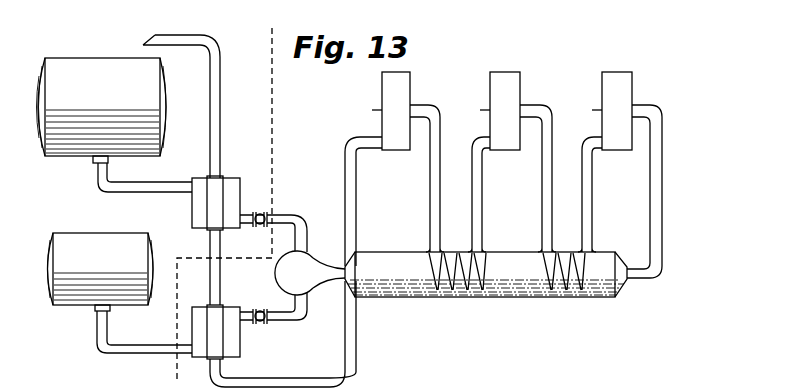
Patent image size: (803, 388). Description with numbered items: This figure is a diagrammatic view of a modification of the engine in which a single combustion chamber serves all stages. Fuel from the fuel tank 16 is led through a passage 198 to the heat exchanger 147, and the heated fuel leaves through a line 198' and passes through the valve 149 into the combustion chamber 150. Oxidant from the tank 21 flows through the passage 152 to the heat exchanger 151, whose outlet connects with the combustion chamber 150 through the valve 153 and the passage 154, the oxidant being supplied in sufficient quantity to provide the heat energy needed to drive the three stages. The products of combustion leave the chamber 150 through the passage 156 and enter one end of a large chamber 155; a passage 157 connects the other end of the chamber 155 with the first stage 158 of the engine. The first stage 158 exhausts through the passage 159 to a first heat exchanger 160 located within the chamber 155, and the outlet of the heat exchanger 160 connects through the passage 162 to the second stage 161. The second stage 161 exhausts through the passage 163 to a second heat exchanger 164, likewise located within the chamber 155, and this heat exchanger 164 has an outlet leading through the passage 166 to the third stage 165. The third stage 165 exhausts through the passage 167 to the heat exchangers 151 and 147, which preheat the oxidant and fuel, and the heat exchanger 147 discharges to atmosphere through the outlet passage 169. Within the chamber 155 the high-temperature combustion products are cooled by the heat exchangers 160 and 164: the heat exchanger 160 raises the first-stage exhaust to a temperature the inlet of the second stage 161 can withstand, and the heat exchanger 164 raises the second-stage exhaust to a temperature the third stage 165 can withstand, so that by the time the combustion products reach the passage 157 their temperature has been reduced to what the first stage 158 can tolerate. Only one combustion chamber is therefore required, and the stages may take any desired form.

The fuel tank 16 is at (85, 62).
The oxidant tank 21 is at (73, 236).
The heat exchanger 147 is at (233, 186).
The valve 149 is at (266, 213).
The combustion chamber 150 is at (323, 254).
The heat exchanger 151 is at (241, 338).
The passage 152 is at (148, 348).
The valve 153 is at (259, 313).
The passage 154 is at (298, 322).
The large chamber 155 is at (492, 298).
The passage 156 is at (343, 285).
The passage 157 is at (662, 228).
The first stage 158 is at (639, 73).
The passage 159 is at (588, 225).
The first heat exchanger 160 is at (587, 287).
The second stage 161 is at (527, 73).
The passage 162 is at (552, 145).
The passage 163 is at (481, 225).
The second heat exchanger 164 is at (433, 283).
The third stage 165 is at (397, 81).
The passage 166 is at (440, 145).
The passage 167 is at (267, 380).
The outlet passage 169 is at (211, 75).
The conduit 198 is at (146, 175).
The conduit 198' is at (301, 225).